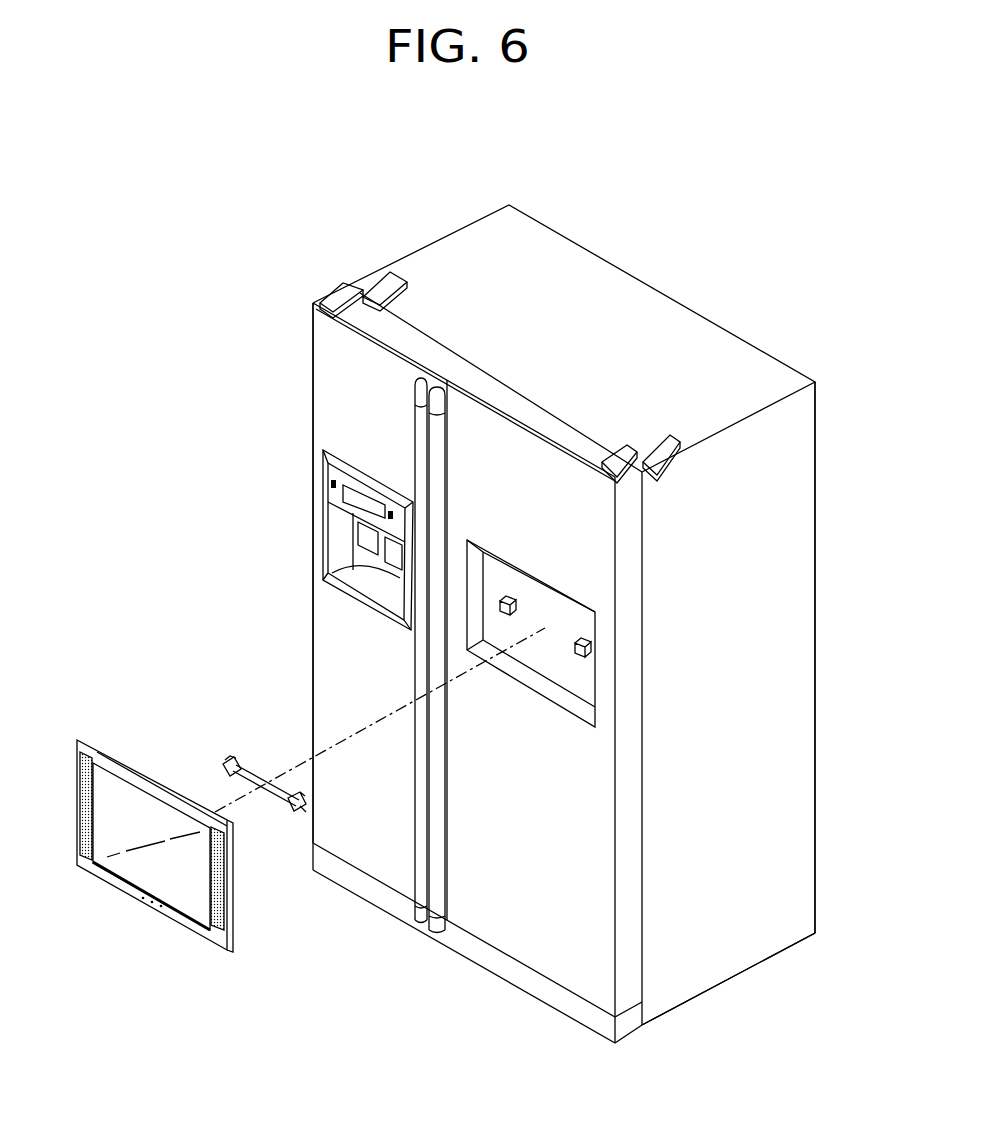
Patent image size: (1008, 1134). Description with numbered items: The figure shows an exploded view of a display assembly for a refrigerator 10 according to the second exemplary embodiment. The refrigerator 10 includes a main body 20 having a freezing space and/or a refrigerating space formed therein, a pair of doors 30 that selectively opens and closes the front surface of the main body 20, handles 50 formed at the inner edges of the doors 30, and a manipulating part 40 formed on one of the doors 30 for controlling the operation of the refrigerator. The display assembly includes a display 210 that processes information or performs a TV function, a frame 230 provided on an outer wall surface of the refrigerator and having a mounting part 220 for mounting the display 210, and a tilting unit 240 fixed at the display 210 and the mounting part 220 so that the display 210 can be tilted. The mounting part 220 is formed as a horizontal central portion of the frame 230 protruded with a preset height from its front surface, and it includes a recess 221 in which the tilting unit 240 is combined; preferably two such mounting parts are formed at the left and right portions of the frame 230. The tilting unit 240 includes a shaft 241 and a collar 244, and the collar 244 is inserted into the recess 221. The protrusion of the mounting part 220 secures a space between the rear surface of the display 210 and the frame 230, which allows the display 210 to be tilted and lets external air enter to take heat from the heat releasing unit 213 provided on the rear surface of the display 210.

The refrigerator 10 is at (703, 267).
The main body 20 is at (805, 530).
The doors 30 is at (322, 640).
The manipulating part 40 is at (336, 490).
The handles 50 is at (420, 432).
The display 210 is at (135, 873).
The heat releasing unit 213 is at (236, 905).
The mounting part 220 is at (597, 644).
The recess 221 is at (597, 655).
The frame 230 is at (572, 627).
The tilting unit 240 is at (212, 748).
The shaft 241 is at (259, 776).
The collar 244 is at (232, 757).